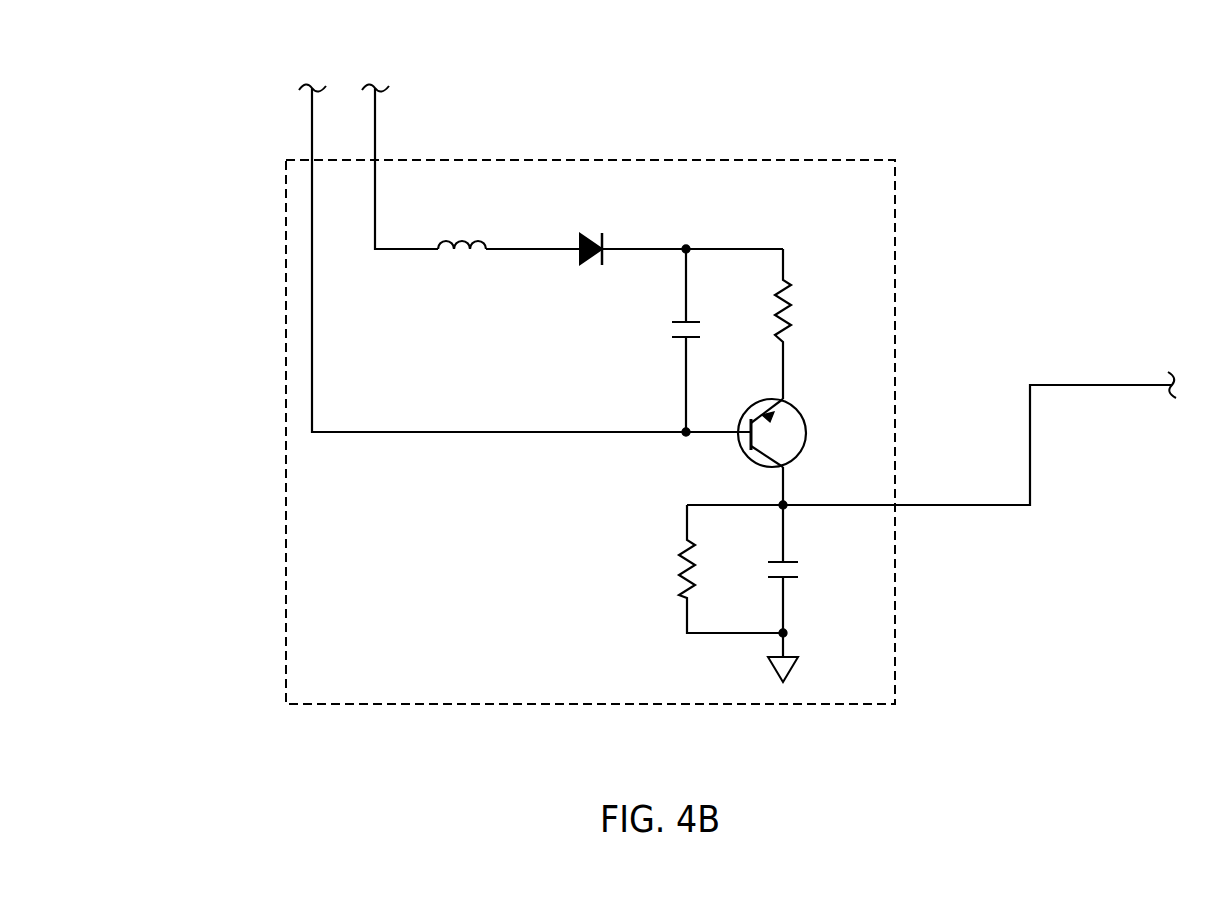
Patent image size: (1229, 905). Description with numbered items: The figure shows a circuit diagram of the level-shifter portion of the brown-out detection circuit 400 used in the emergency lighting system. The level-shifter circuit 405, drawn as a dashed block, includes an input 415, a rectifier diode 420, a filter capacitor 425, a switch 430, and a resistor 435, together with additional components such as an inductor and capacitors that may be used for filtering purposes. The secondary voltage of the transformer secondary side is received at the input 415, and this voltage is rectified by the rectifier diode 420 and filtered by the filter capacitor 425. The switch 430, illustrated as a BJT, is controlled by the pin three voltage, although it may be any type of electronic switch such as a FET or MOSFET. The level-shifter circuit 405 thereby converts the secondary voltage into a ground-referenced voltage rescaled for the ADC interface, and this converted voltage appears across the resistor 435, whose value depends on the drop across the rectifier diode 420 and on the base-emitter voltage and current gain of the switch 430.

The brown-out detection circuit 400 is at (897, 130).
The level-shifter circuit 405 is at (382, 706).
The input 415 is at (334, 331).
The rectifier diode 420 is at (578, 252).
The filter capacitor 425 is at (680, 340).
The switch 430 is at (737, 440).
The resistor 435 is at (678, 585).